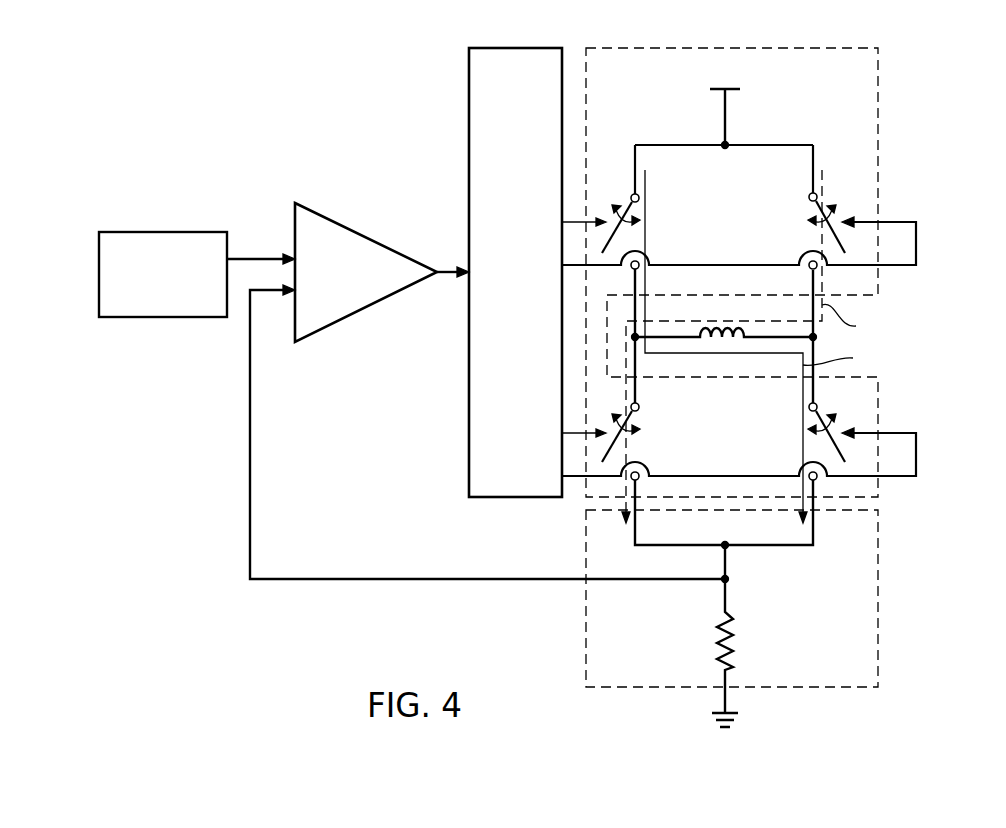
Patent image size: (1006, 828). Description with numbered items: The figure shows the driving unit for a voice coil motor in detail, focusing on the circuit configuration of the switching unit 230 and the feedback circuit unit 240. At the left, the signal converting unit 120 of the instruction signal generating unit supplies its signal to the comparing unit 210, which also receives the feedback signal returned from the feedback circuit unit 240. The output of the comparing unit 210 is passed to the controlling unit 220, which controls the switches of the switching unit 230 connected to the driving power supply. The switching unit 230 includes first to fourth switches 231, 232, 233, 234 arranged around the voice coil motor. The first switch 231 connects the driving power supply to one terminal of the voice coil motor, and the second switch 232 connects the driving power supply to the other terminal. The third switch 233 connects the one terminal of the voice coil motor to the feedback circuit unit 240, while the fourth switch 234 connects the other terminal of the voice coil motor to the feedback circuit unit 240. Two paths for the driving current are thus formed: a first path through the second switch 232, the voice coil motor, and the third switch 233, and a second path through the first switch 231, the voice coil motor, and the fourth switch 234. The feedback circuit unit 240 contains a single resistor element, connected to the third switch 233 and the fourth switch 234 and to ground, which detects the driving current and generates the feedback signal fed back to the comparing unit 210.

The signal converting unit 120 is at (152, 232).
The comparing unit 210 is at (363, 236).
The controlling unit 220 is at (523, 48).
The switching unit 230 is at (789, 280).
The first switch 231 is at (643, 215).
The second switch 232 is at (805, 214).
The third switch 233 is at (643, 425).
The fourth switch 234 is at (805, 424).
The feedback circuit unit 240 is at (843, 688).